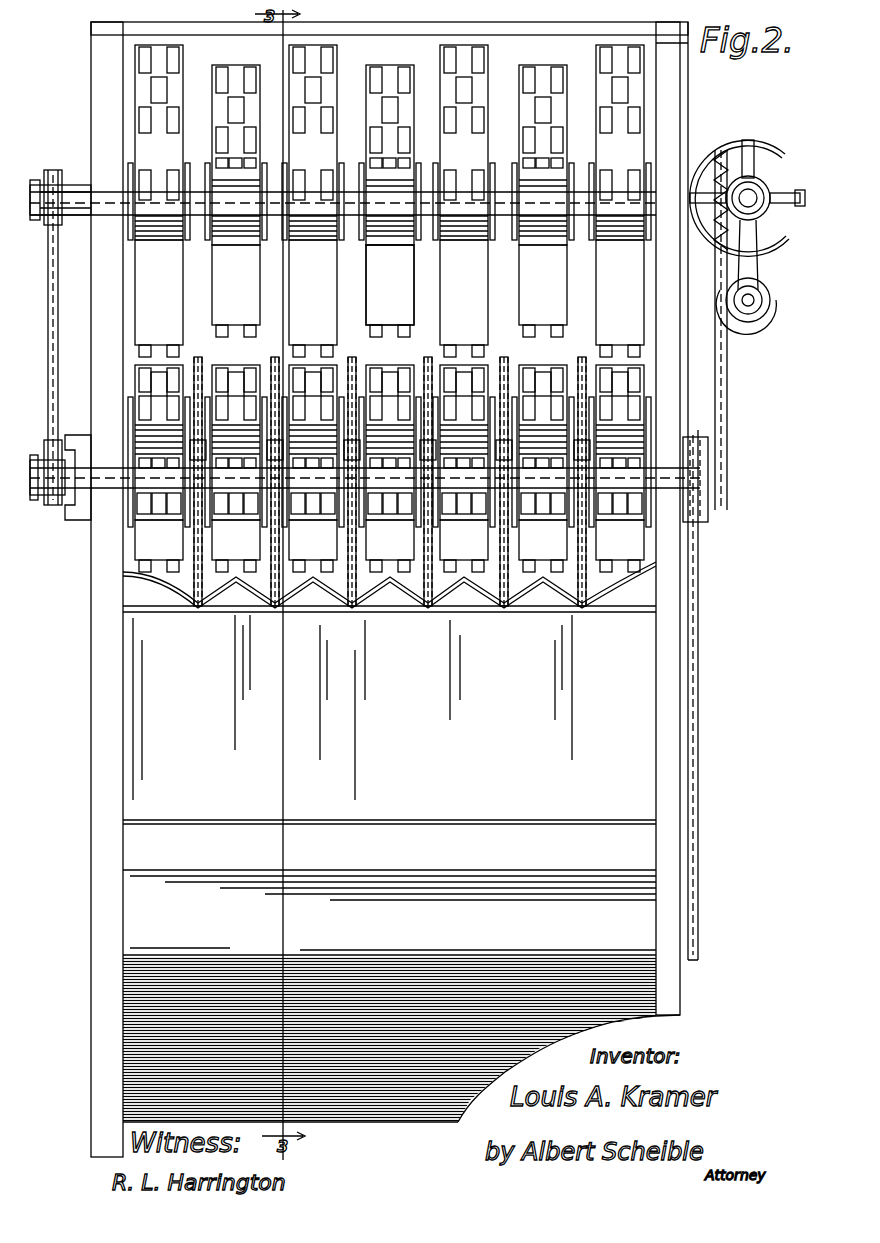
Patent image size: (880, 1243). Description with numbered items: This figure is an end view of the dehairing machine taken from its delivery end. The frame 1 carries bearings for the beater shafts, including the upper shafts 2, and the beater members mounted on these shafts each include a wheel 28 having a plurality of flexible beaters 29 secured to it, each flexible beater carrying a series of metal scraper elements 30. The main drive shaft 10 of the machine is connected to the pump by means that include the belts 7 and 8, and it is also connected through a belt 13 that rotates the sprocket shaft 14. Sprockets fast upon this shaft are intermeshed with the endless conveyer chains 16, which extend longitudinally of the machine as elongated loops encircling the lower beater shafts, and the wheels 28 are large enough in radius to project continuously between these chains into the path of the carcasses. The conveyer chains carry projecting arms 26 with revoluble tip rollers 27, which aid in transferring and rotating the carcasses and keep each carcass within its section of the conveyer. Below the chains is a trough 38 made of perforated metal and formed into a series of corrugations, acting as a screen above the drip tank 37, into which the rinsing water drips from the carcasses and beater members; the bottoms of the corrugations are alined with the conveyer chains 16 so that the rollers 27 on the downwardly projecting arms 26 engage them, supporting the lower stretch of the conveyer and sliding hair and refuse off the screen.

The frame 1 is at (390, 285).
The upper shafts 2 is at (577, 200).
The belt 7 is at (700, 624).
The belt 8 is at (48, 357).
The main drive shaft 10 is at (752, 194).
The belt 13 is at (727, 369).
The sprocket shaft 14 is at (118, 478).
The endless conveyer chain 16 is at (267, 450).
The arms 26 is at (270, 364).
The rollers 27 is at (198, 357).
The wheel 28 is at (512, 232).
The flexible beaters 29 is at (635, 90).
The metal scraper elements 30 is at (253, 72).
The drip tank 37 is at (445, 954).
The trough 38 is at (144, 576).